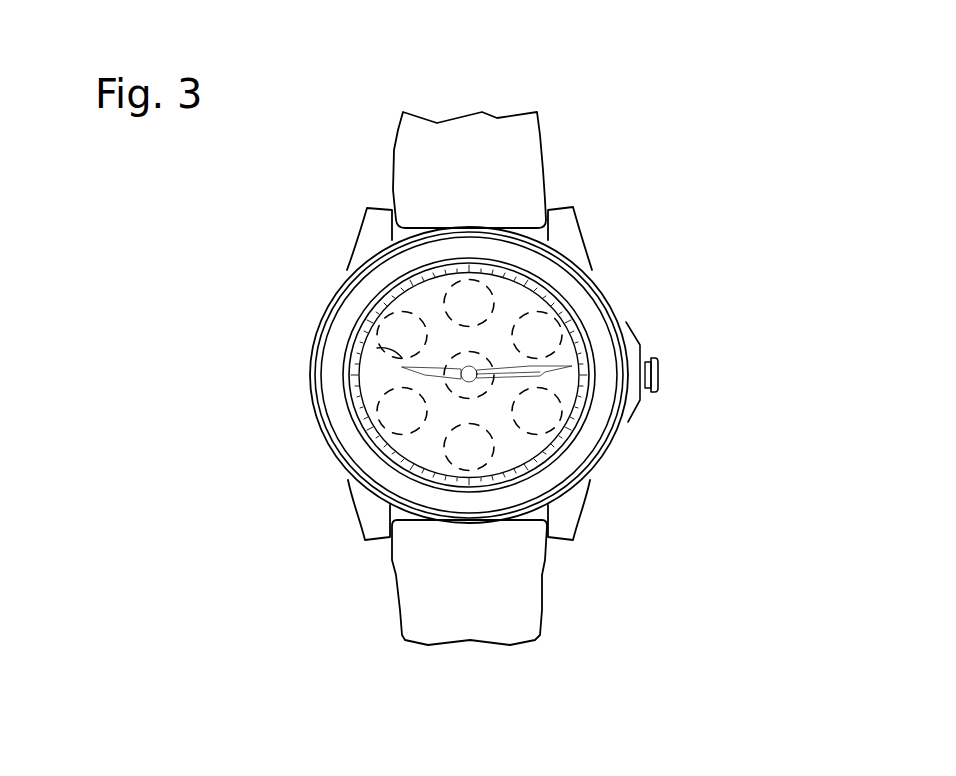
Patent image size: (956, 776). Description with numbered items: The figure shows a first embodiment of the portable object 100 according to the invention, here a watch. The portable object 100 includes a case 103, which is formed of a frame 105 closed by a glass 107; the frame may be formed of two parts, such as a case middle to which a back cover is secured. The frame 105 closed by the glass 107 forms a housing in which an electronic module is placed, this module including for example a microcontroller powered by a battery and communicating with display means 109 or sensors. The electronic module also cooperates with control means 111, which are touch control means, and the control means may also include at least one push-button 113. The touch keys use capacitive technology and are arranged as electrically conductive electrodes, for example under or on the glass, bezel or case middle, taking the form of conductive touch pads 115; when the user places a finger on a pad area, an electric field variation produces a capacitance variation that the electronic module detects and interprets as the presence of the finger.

The portable object 100 is at (700, 205).
The case 103 is at (613, 300).
The frame 105 is at (617, 434).
The glass 107 is at (520, 445).
The display means 109 is at (425, 369).
The control means 111 is at (380, 348).
The push-button 113 is at (658, 378).
The conductive touch pads 115 is at (383, 322).